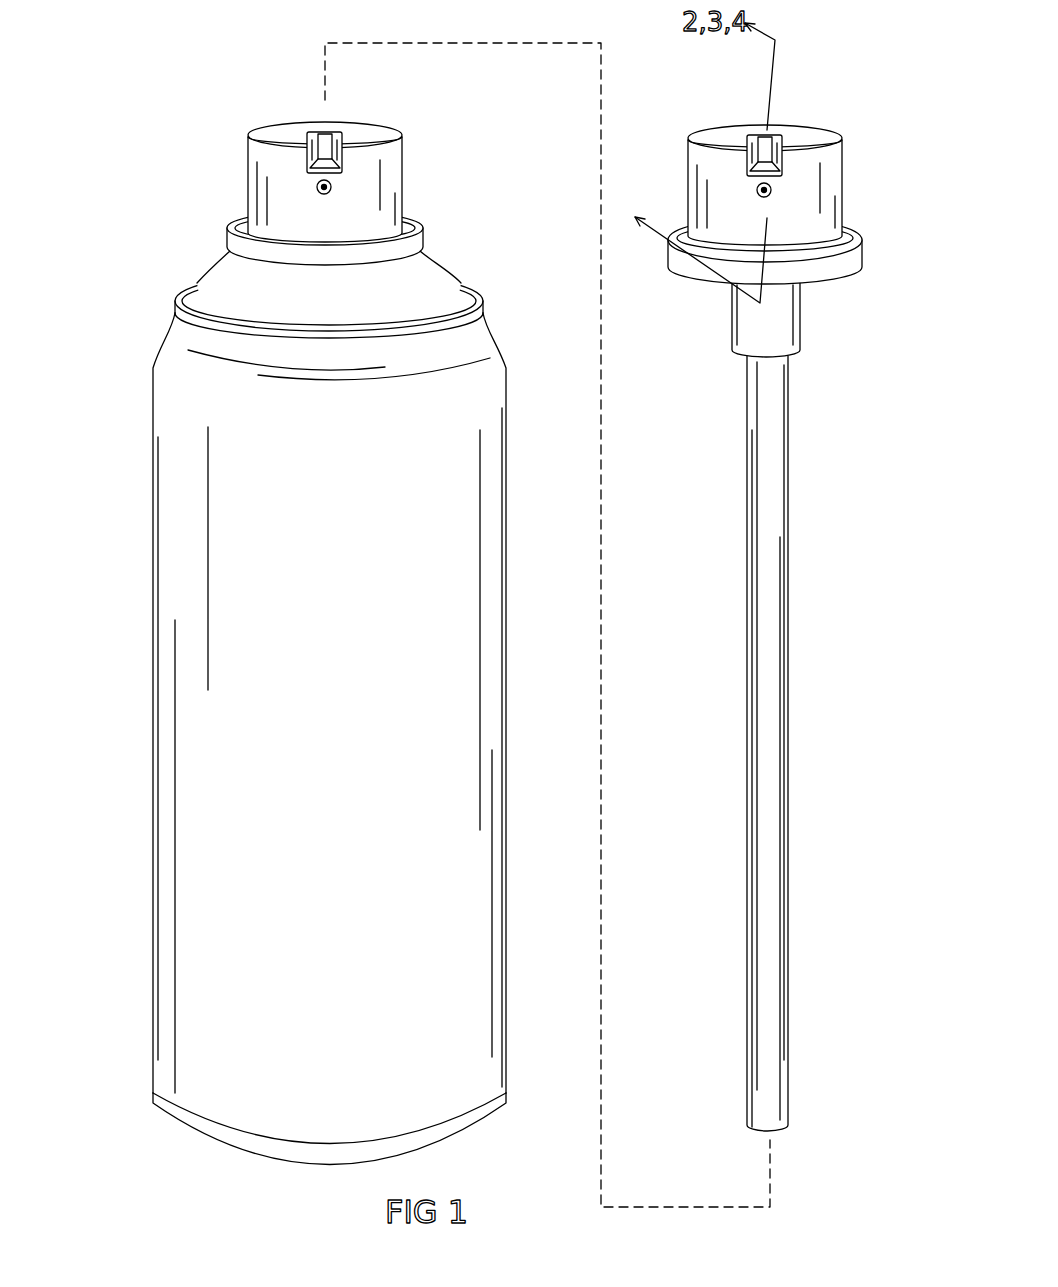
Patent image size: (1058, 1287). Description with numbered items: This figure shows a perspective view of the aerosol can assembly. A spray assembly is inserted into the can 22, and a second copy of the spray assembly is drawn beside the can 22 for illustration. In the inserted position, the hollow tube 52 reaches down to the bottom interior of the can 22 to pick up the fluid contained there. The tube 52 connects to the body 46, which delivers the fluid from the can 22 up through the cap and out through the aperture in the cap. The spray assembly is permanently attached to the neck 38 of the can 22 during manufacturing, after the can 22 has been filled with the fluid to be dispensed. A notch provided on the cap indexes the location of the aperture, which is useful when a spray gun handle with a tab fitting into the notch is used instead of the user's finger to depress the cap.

The can 22 is at (170, 530).
The neck 38 is at (233, 250).
The body 46 is at (780, 318).
The tube 52 is at (772, 517).